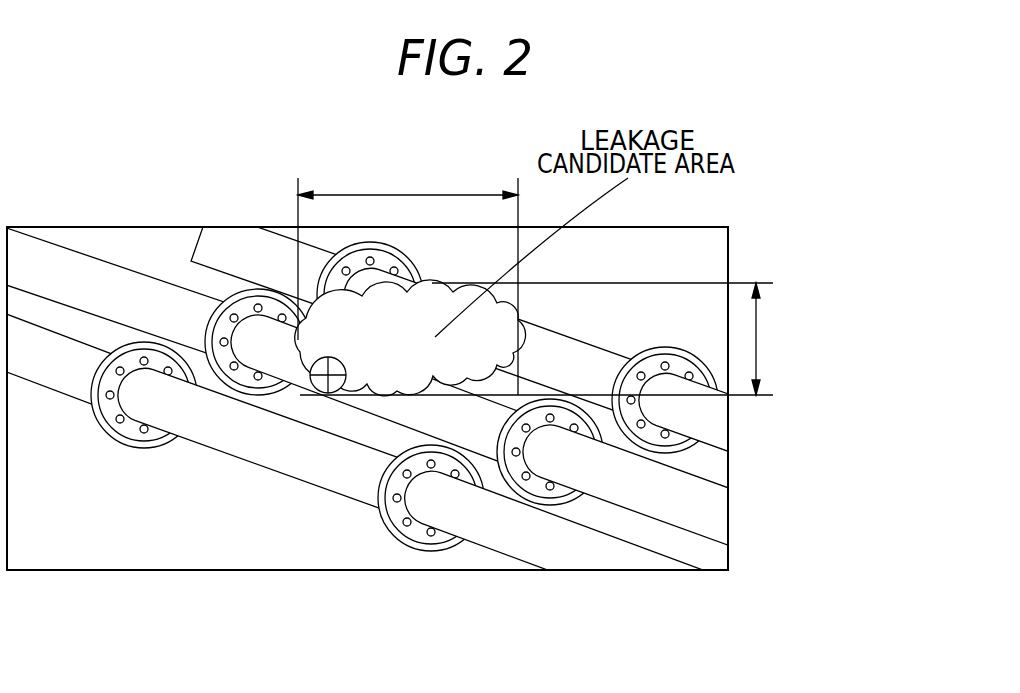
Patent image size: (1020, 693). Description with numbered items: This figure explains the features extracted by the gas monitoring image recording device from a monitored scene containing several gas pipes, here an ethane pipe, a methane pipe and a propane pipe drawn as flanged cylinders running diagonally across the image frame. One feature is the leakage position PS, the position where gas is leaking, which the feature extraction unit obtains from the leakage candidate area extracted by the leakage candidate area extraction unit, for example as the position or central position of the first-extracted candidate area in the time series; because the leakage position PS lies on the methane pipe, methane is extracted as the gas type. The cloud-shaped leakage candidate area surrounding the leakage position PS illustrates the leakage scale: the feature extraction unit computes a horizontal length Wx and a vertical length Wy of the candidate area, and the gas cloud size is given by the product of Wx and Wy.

The leakage position PS is at (313, 362).
The horizontal length Wx is at (408, 279).
The vertical length Wy is at (546, 339).